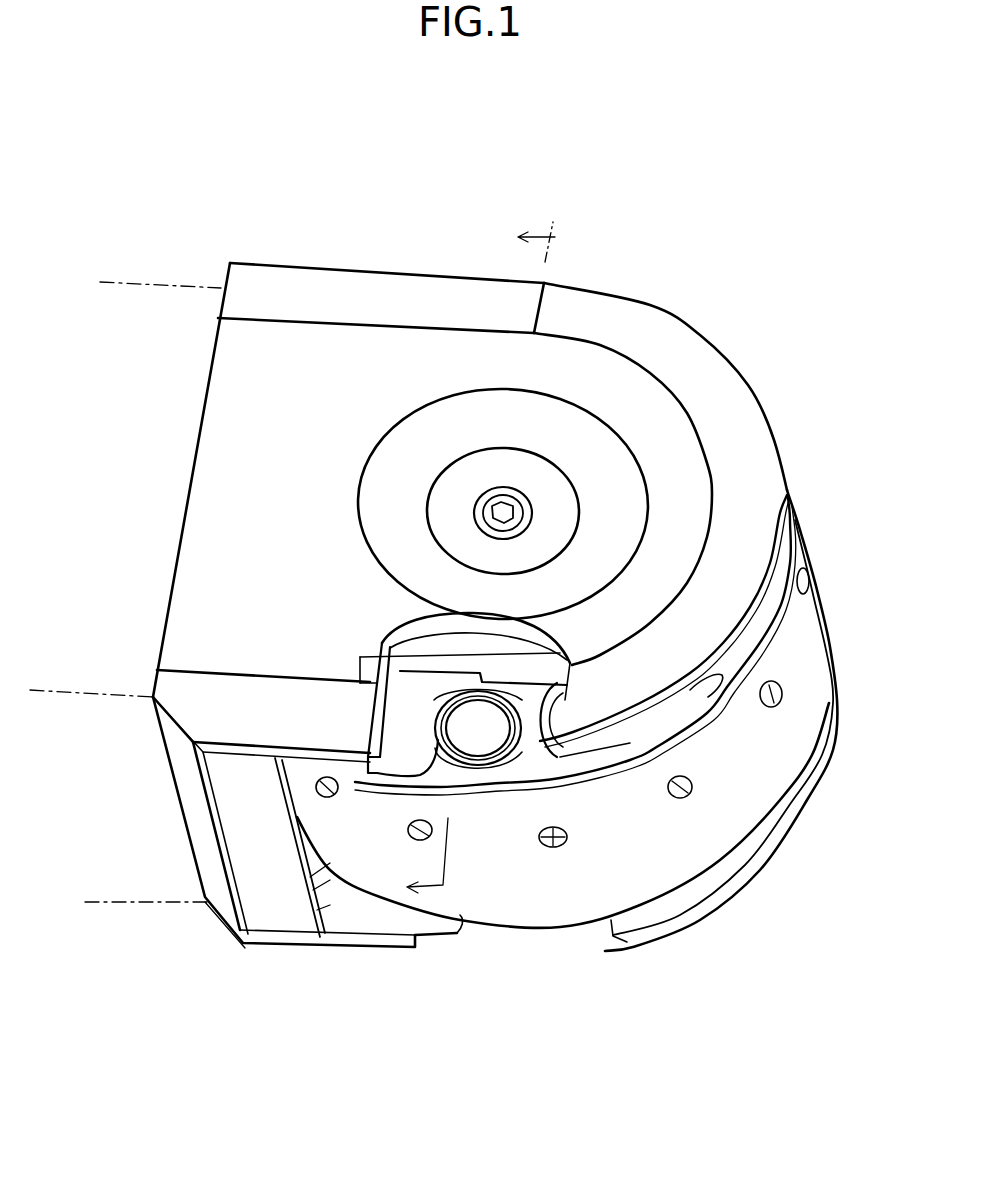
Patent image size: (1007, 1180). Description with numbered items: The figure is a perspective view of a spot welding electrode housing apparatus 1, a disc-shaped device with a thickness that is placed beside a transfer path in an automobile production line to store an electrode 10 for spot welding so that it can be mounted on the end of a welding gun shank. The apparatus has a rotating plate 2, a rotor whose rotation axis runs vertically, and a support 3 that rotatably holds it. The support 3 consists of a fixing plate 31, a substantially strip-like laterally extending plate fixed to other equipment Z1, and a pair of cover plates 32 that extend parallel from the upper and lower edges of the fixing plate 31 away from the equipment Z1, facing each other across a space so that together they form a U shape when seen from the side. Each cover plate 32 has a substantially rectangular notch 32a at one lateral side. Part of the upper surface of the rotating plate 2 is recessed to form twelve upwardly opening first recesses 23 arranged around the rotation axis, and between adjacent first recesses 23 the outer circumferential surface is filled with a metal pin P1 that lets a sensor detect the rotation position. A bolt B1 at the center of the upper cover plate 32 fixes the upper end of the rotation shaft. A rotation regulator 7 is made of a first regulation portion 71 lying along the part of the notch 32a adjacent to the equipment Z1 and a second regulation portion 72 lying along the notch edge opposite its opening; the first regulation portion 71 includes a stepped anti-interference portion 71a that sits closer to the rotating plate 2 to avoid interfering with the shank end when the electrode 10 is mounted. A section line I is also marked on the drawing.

The spot welding electrode housing apparatus 1 is at (757, 193).
The rotating plate 2 is at (778, 812).
The support 3 is at (278, 262).
The rotation regulator 7 is at (397, 762).
The electrode 10 is at (477, 693).
The first recess 23 is at (493, 770).
The fixing plate 31 is at (190, 793).
The cover plate 32 is at (348, 345).
The notch 32a is at (403, 700).
The first regulation portion 71 is at (457, 782).
The anti-interference portion 71a is at (375, 682).
The second regulation portion 72 is at (503, 667).
The bolt B1 is at (507, 492).
The pin P1 is at (778, 692).
The equipment Z1 is at (143, 286).
The section line I is at (481, 535).